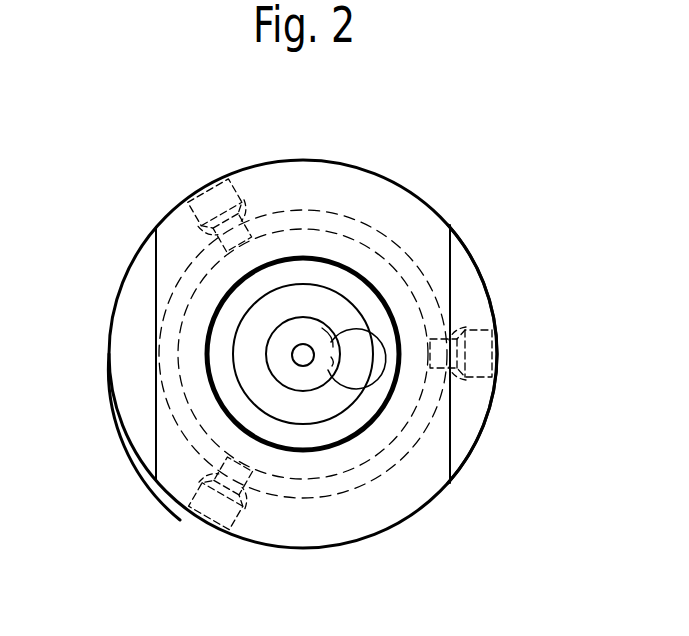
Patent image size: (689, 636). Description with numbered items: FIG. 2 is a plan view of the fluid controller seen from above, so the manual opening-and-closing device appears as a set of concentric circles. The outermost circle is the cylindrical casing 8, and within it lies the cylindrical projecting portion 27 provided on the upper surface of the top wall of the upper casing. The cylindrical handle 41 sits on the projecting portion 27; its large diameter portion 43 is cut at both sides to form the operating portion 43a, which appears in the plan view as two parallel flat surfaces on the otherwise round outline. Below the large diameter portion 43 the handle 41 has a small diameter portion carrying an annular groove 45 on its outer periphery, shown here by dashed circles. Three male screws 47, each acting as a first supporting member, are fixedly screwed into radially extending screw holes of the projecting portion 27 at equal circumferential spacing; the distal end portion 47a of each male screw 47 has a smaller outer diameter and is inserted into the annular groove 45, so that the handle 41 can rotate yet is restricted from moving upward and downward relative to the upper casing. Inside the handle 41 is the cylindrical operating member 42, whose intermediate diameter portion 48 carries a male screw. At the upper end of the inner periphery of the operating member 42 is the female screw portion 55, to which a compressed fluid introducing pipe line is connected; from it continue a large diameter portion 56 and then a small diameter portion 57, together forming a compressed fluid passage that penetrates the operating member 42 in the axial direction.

The cylindrical casing 8 is at (465, 250).
The cylindrical projecting portion 27 is at (131, 404).
The handle 41 is at (338, 172).
The operating member 42 is at (242, 407).
The large diameter portion 43 is at (166, 232).
The operating portion 43a is at (153, 294).
The annular groove 45 is at (427, 295).
The male screw 47 is at (203, 198).
The distal end portion 47a is at (250, 223).
The intermediate diameter portion 48 is at (333, 282).
The female screw portion 55 is at (337, 350).
The large diameter portion 56 is at (330, 365).
The small diameter portion 57 is at (300, 357).